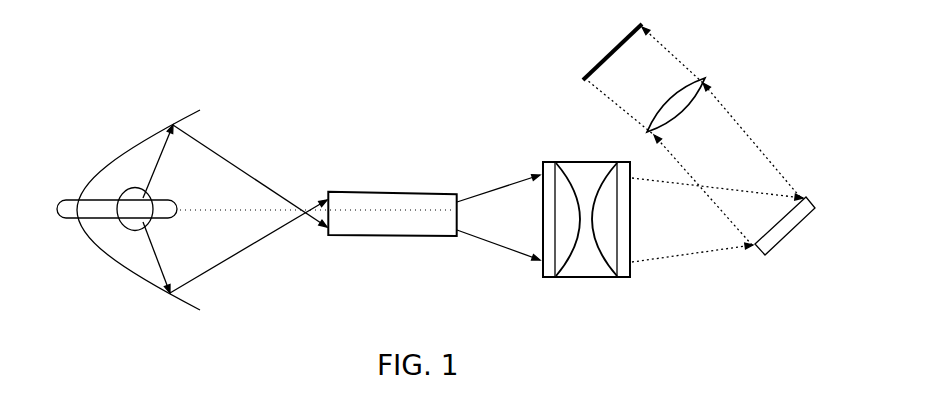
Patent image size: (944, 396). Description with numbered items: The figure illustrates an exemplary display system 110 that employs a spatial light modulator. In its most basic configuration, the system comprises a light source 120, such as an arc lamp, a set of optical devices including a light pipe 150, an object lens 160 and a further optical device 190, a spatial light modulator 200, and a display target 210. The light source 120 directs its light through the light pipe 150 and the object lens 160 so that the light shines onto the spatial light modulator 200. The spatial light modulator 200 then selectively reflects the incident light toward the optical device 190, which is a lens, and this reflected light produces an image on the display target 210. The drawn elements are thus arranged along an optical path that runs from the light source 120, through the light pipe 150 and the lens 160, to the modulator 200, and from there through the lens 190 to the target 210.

The illumination system 110 is at (352, 68).
The light source 120 is at (115, 152).
The light pipe 150 is at (392, 237).
The object lens 160 is at (578, 277).
The optical device 190 is at (705, 78).
The spatial light modulator 200 is at (762, 255).
The display target 210 is at (617, 43).